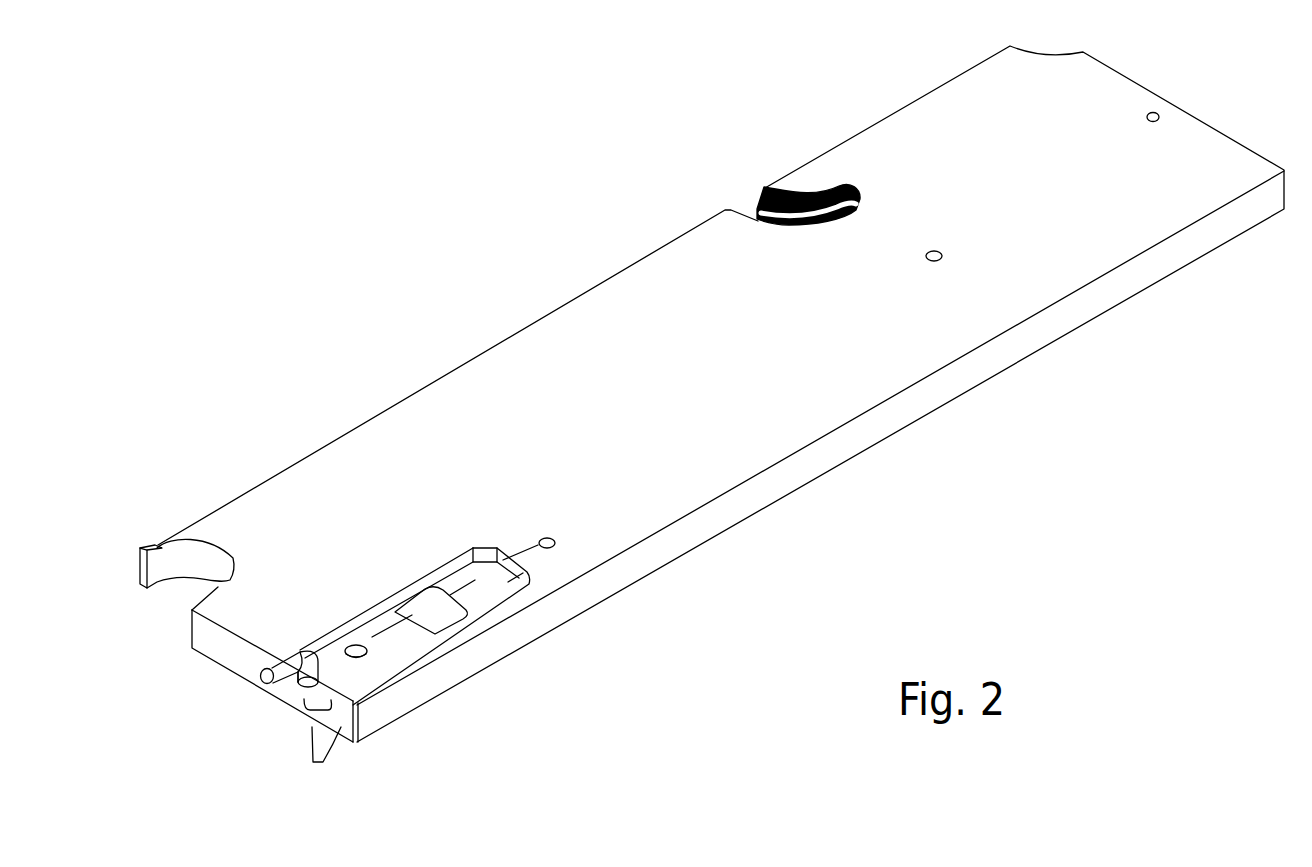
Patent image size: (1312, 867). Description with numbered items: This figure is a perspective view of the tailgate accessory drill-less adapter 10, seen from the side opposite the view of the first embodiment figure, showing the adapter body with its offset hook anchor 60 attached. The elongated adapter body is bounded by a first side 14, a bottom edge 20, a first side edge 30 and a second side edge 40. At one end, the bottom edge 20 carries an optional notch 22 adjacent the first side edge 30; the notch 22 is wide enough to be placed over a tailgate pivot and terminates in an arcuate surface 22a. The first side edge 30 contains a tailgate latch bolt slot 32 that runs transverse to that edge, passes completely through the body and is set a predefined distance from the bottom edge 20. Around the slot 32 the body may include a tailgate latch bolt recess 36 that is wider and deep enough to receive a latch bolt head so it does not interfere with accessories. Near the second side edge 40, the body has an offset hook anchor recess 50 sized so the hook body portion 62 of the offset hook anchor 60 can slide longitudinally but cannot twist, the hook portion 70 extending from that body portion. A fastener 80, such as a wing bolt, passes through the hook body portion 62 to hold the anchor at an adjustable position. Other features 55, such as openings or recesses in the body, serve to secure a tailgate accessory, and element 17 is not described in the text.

The drill-less adapter 10 is at (493, 215).
The first side 14 is at (542, 365).
The locating pin 17 is at (578, 498).
The bottom edge 20 is at (233, 655).
The notch 22 is at (185, 588).
The arcuate surface 22a is at (172, 553).
The first side edge 30 is at (297, 455).
The tailgate latch bolt slot 32 is at (757, 209).
The tailgate latch bolt recess 36 is at (817, 187).
The second side edge 40 is at (838, 450).
The offset hook anchor recess 50 is at (530, 570).
The other features 55 is at (941, 254).
The offset hook anchor 60 is at (320, 648).
The hook body portion 62 is at (397, 613).
The hook portion 70 is at (290, 672).
The fastener 80 is at (365, 646).